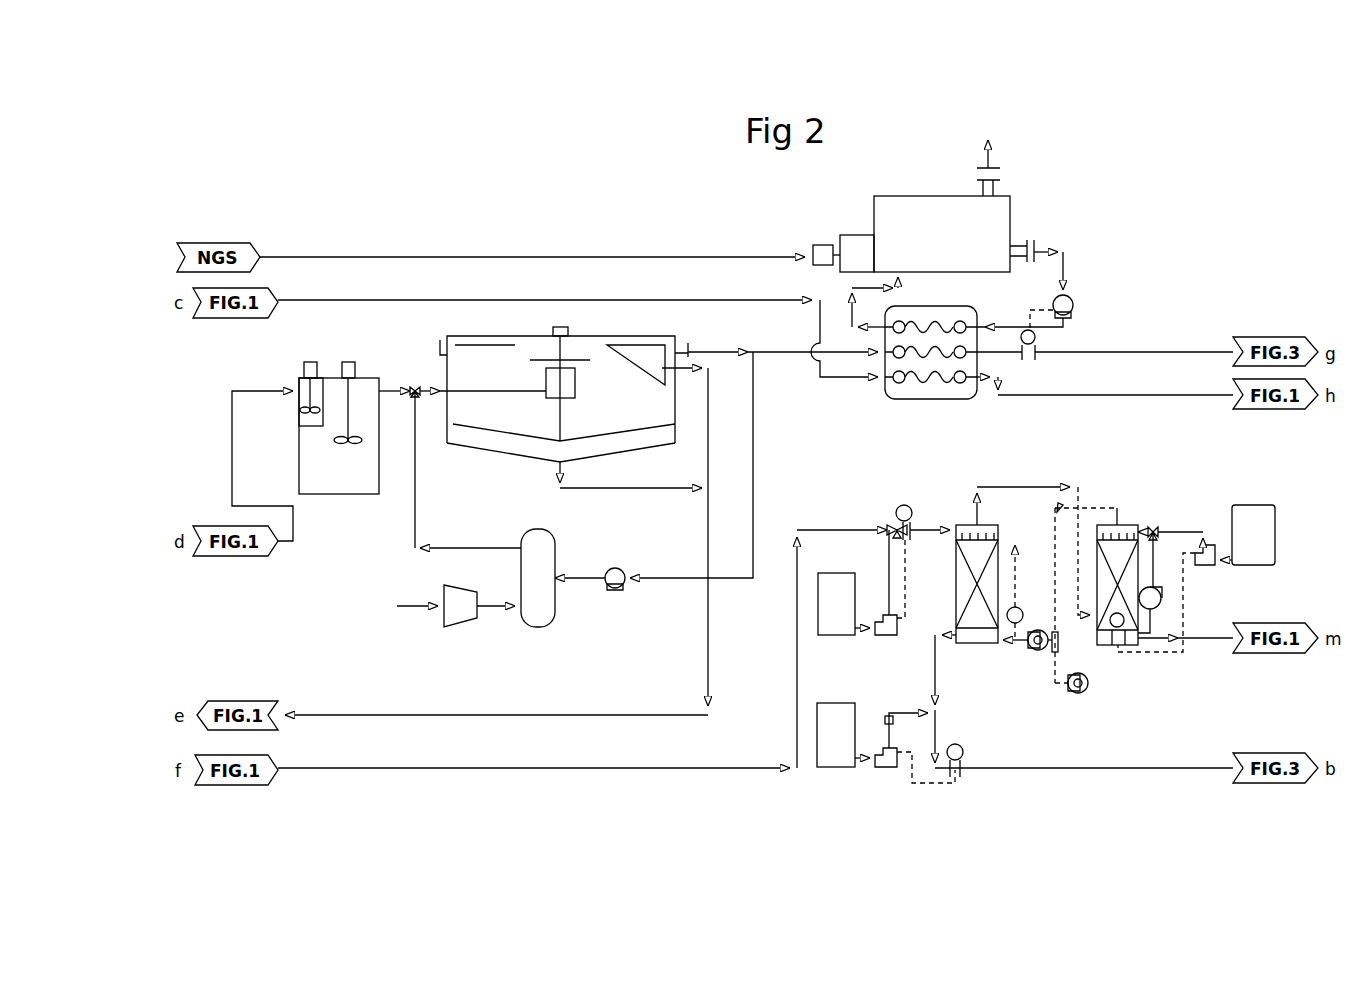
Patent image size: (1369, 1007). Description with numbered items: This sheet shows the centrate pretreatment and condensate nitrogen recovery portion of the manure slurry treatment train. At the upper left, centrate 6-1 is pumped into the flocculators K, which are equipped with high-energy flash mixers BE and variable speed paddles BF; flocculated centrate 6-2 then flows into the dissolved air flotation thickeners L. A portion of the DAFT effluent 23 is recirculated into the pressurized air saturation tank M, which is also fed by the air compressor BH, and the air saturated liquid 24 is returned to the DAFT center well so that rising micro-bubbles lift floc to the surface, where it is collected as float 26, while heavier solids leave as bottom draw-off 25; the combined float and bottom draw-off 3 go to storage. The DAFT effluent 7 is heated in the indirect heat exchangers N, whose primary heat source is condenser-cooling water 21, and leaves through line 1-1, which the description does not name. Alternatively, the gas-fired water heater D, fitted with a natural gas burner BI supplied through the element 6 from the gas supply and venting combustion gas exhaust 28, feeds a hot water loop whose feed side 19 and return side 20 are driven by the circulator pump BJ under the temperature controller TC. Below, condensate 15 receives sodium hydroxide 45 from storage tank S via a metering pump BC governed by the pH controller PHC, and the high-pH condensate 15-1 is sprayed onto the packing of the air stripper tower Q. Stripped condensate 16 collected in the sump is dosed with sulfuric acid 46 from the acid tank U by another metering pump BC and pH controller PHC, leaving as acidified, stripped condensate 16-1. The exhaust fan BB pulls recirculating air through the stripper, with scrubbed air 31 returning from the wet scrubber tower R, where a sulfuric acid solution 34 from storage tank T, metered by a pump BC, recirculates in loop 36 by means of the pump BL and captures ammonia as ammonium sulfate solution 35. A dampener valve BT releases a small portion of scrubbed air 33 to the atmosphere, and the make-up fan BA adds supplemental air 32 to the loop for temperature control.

The condenser cooling water loop hot side 21 is at (569, 304).
The burner unit 6 is at (826, 255).
The burner of natural gas auxiliary water heater BI is at (842, 264).
The auxiliary water heater D is at (954, 226).
The hot water boiler combustion gas exhaust 28 is at (1000, 154).
The hot water loop feed side 19 is at (1063, 271).
The circulator pump BJ is at (1041, 311).
The temperature element control TC is at (1043, 335).
The hot water loop return side 20 is at (875, 302).
The heat exchanger N is at (935, 365).
The DAFT effluent 7 is at (783, 341).
The heated liquid line to FIG.3 1-1 is at (1105, 340).
The rapid mixer/flocculator K is at (339, 436).
The variable speed rapid mixer BE is at (308, 375).
The variable speed flocculation mixer BF is at (348, 390).
The centrate after polymer and aluminum sulfate addition 6-1 is at (262, 455).
The flocculated centrate 6-2 is at (462, 382).
The air-saturated DAFT effluent line 24 is at (468, 469).
The dissolved air flotation thickener L is at (564, 394).
The DAFT float line 26 is at (699, 537).
The DAFT bottom sludge draw-off line 25 is at (631, 475).
The effluent recirculation line 23 is at (706, 465).
The float and bottom draw-off sludge waste line 3 is at (496, 702).
The DAFT air saturation tank M is at (538, 578).
The chemical addition diaphragm pump BC is at (885, 669).
The compressor BH is at (456, 619).
The condensate 15 is at (534, 757).
The condensate at high pH 15-1 is at (878, 637).
The pH element control PHC is at (922, 633).
The sodium hydroxide addition line 45 is at (895, 639).
The sodium hydroxide storage and feeding system S is at (844, 604).
The sulfuric acid addition stripped condensate pH control system U is at (843, 735).
The air stripper tower Q is at (977, 584).
The sulfuric acid addition line 46 is at (1033, 539).
The air-stripped condensate 16 is at (950, 699).
The acidified stripped condensate 16-1 is at (1084, 756).
The exhaust air to atmosphere 33 is at (1028, 576).
The dampener valve BT is at (1025, 614).
The air recirculation fan BB is at (1030, 651).
The acid-scrubbed air return 31 is at (1086, 593).
The ambient air addition 32 is at (1048, 693).
The make-up air fan BA is at (1080, 697).
The wet scrubber tower R is at (1117, 585).
The sulfuric acid addition 34 is at (1185, 535).
The sulfuric acid storage and feeding system T is at (1253, 535).
The wet scrubber low pH water recirculating loop 36 is at (1167, 559).
The recirculation pump BL is at (1157, 610).
The ammonium sulfate solution 35 is at (1175, 608).